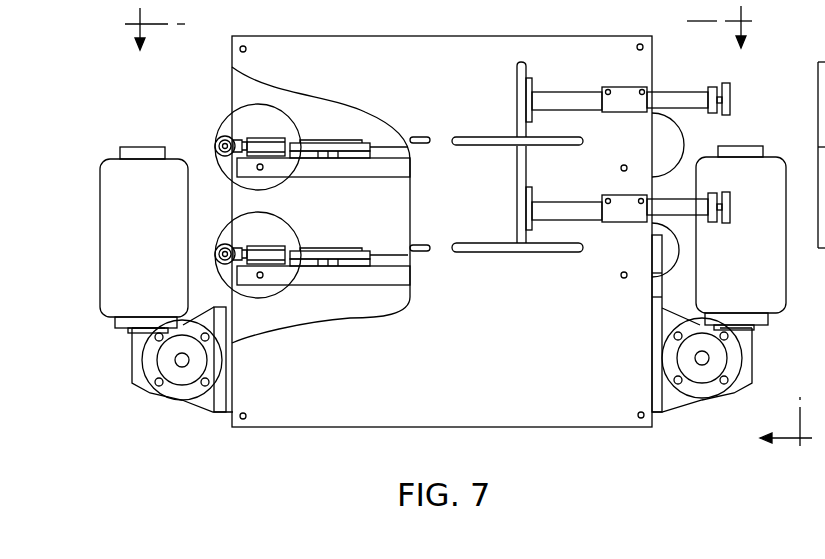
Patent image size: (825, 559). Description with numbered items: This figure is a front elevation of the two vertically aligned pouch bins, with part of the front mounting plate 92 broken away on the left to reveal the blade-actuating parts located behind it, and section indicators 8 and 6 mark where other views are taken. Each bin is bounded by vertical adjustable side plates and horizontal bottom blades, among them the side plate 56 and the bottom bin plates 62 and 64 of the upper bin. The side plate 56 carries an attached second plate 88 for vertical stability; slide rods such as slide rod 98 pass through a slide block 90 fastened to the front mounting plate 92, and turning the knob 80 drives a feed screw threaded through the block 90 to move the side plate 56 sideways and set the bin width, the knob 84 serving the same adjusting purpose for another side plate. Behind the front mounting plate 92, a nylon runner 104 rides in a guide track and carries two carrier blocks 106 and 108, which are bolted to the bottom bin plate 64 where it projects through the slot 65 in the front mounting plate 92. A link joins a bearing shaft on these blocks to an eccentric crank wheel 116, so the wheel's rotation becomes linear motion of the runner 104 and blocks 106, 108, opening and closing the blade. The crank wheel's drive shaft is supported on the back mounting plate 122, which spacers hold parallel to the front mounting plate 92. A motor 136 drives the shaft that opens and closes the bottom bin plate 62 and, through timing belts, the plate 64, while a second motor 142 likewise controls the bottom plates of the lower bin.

The front mounting plate 92 is at (575, 412).
The back mounting plate 122 is at (242, 88).
The bottom bin plate 62 is at (335, 138).
The carrier block 106 is at (363, 150).
The carrier block 108 is at (310, 158).
The runner 104 is at (363, 175).
The side plate 56 is at (526, 65).
The bottom bin plate 64 is at (477, 137).
The slot 65 is at (567, 147).
The second plate 88 is at (532, 84).
The slide rod 98 is at (675, 95).
The slide block 90 is at (623, 90).
The knob 80 is at (730, 92).
The knob 84 is at (732, 207).
The eccentric crank arm or wheel 116 is at (670, 143).
The motor 136 is at (107, 233).
The motor 142 is at (785, 275).
The section line 8- 8 is at (440, 25).
The section line 6- 6 is at (789, 436).